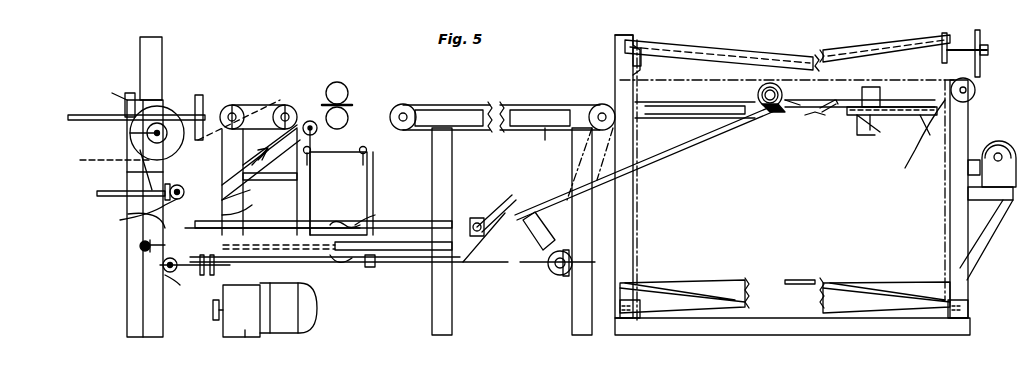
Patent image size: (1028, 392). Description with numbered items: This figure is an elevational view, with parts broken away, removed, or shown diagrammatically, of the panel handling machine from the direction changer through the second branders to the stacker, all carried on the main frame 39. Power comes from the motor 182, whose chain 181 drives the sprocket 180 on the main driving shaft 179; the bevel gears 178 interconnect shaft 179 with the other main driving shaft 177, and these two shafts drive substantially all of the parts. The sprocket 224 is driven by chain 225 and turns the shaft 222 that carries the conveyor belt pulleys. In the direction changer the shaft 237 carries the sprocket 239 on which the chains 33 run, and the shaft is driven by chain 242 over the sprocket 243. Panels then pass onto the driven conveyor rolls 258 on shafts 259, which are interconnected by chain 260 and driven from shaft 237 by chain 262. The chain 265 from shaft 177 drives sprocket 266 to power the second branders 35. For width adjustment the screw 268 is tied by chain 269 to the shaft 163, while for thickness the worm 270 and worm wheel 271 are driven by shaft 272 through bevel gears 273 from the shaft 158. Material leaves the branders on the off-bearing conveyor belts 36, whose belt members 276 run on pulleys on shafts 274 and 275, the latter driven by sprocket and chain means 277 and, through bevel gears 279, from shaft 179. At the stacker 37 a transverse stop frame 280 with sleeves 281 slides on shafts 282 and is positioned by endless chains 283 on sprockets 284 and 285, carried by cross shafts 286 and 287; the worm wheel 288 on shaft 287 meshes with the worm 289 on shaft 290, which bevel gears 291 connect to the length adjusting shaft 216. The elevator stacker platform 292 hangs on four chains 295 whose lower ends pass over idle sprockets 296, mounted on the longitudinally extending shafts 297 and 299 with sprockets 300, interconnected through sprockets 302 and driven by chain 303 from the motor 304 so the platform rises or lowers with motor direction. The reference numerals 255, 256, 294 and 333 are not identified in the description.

The chains 33 is at (108, 92).
The second branders 35 is at (351, 77).
The off-bearing conveyor belts 36 is at (527, 93).
The stacker 37 is at (814, 35).
The main frame 39 is at (127, 331).
The shaft 158 is at (145, 246).
The shaft 163 is at (178, 185).
The main driving shaft 177 is at (150, 268).
The bevel gears 178 is at (180, 285).
The main driving shaft 179 is at (372, 266).
The sprocket 180 is at (330, 262).
The chain 181 is at (210, 296).
The motor 182 is at (248, 330).
The shaft 216 is at (128, 212).
The shaft 222 is at (88, 115).
The sprocket 224 is at (201, 95).
The chain 225 is at (128, 150).
The shaft 237 is at (130, 132).
The sprocket 239 is at (168, 110).
The chain 242 is at (140, 173).
The sprocket 243 is at (130, 93).
The pusher bar 255 is at (97, 193).
The link 256 is at (120, 220).
The driven conveyor rolls 258 is at (285, 110).
The shafts 259 is at (323, 170).
The chain 260 is at (244, 108).
The chain 262 is at (210, 112).
The chain 265 is at (322, 220).
The sprocket 266 is at (336, 226).
The screw 268 is at (316, 132).
The chain 269 is at (262, 158).
The worm 270 is at (345, 247).
The worm wheel 271 is at (348, 266).
The shaft 272 is at (248, 206).
The bevel gears 273 is at (150, 247).
The shaft 274 is at (405, 116).
The shaft 275 is at (601, 104).
The belt members 276 is at (560, 105).
The sprocket and chain means 277 is at (572, 155).
The bevel gears 279 is at (558, 276).
The transverse stop frame 280 is at (858, 136).
The sleeves 281 is at (890, 115).
The shafts 282 is at (812, 116).
The endless chains 283 is at (905, 110).
The sprockets 284 is at (958, 84).
The sprockets 285 is at (758, 93).
The cross shaft 286 is at (925, 139).
The cross shaft 287 is at (358, 224).
The worm wheel 288 is at (762, 86).
The worm 289 is at (776, 112).
The shaft 290 is at (262, 226).
The bevel gears 291 is at (247, 189).
The elevator stacker platform 292 is at (893, 290).
The tray 294 is at (805, 283).
The chains 295 is at (640, 258).
The idle sprockets 296 is at (634, 320).
The longitudinally extending shaft 297 is at (988, 52).
The longitudinally extending shaft 299 is at (812, 52).
The sprockets 300 is at (641, 60).
The sprockets 302 is at (975, 32).
The chain 303 is at (978, 146).
The motor 304 is at (999, 164).
The spring 333 is at (824, 114).